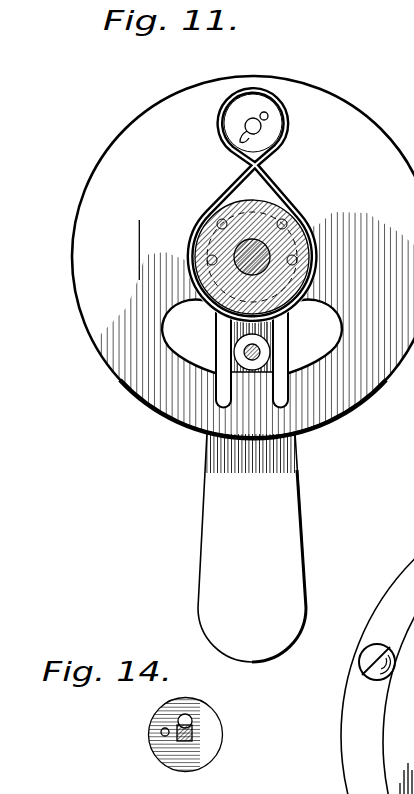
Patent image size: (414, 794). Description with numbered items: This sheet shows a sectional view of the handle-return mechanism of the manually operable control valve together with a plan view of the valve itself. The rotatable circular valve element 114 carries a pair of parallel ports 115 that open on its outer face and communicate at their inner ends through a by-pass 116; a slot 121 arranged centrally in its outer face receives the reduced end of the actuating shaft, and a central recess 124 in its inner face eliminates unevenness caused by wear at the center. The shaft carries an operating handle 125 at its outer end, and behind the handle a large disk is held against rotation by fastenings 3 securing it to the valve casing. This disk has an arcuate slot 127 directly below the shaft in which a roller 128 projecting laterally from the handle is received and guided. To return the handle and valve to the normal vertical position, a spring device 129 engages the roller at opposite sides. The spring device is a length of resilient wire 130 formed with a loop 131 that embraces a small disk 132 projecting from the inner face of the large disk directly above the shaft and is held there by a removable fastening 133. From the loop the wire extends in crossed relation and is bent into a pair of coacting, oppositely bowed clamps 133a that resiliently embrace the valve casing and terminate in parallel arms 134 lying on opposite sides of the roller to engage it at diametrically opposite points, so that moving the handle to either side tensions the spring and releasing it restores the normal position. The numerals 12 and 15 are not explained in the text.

In FIG. 11, the fastenings 3 is at (247, 196).
In FIG. 14, the ring frame 12 is at (341, 757).
In FIG. 14, the pivot pin 15 is at (193, 703).
In FIG. 14, the rotatable circular valve element 114 is at (218, 715).
In FIG. 14, the ports 115 is at (160, 732).
In FIG. 14, the by-pass 116 is at (192, 727).
In FIG. 14, the slot 121 is at (192, 740).
In FIG. 14, the central recess 124 is at (185, 743).
In FIG. 11, the operating handle 125 is at (287, 527).
In FIG. 11, the arcuate slot 127 is at (175, 342).
In FIG. 11, the roller 128 is at (257, 367).
In FIG. 11, the spring device 129 is at (271, 173).
In FIG. 11, the resilient wire 130 is at (283, 188).
In FIG. 11, the loop 131 is at (252, 99).
In FIG. 11, the disk 132 is at (261, 105).
In FIG. 11, the removable fastening 133 is at (233, 103).
In FIG. 11, the clamps 133a is at (188, 240).
In FIG. 11, the parallel arms 134 is at (222, 410).